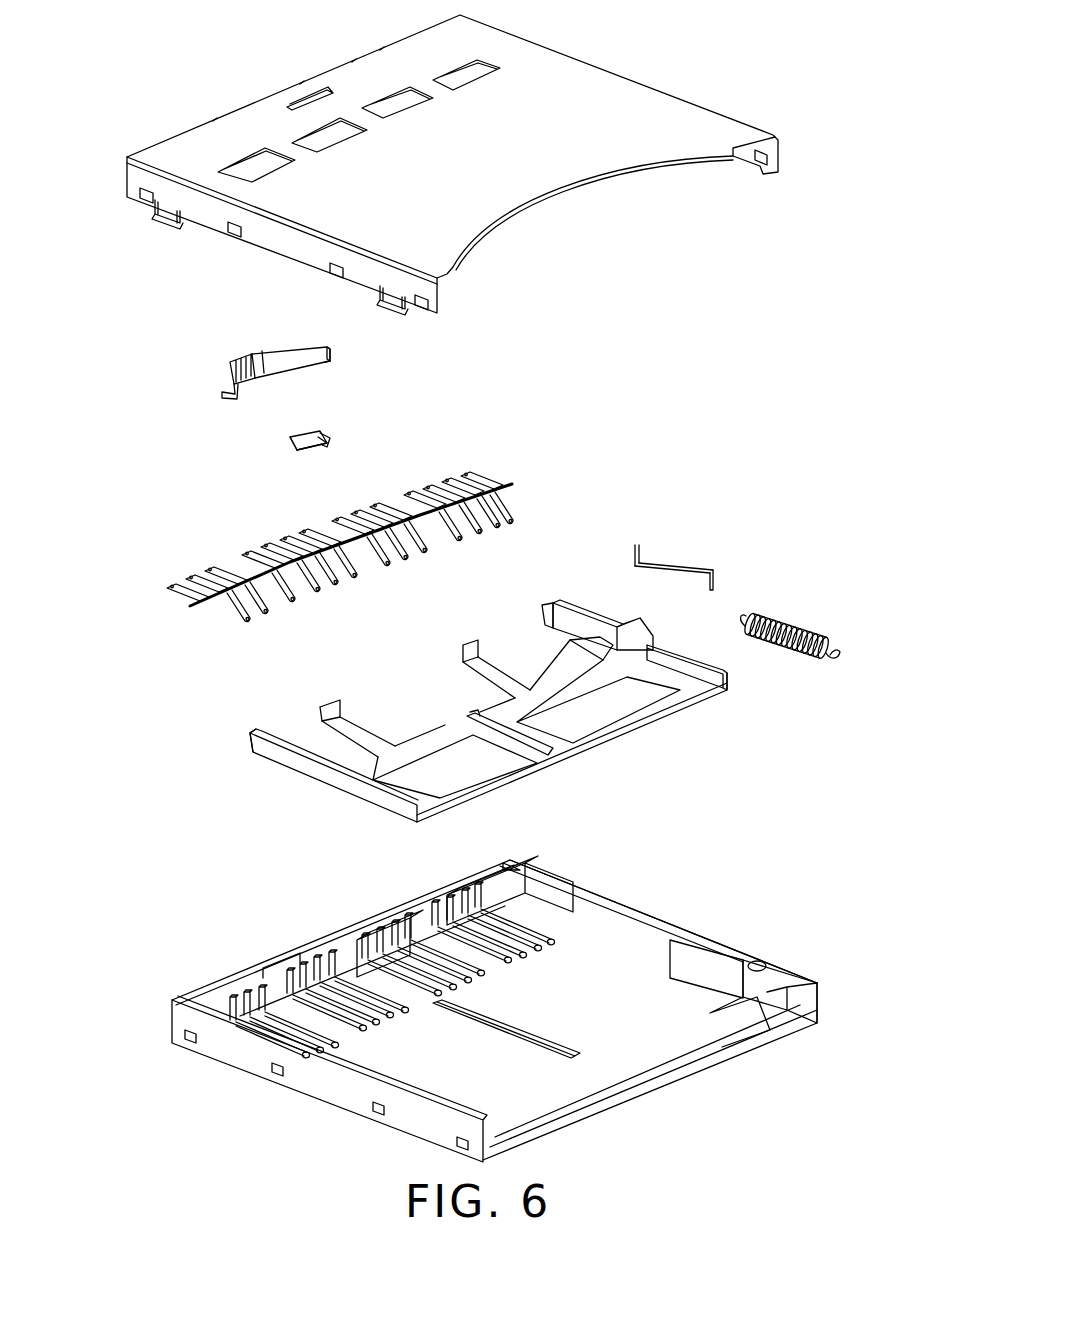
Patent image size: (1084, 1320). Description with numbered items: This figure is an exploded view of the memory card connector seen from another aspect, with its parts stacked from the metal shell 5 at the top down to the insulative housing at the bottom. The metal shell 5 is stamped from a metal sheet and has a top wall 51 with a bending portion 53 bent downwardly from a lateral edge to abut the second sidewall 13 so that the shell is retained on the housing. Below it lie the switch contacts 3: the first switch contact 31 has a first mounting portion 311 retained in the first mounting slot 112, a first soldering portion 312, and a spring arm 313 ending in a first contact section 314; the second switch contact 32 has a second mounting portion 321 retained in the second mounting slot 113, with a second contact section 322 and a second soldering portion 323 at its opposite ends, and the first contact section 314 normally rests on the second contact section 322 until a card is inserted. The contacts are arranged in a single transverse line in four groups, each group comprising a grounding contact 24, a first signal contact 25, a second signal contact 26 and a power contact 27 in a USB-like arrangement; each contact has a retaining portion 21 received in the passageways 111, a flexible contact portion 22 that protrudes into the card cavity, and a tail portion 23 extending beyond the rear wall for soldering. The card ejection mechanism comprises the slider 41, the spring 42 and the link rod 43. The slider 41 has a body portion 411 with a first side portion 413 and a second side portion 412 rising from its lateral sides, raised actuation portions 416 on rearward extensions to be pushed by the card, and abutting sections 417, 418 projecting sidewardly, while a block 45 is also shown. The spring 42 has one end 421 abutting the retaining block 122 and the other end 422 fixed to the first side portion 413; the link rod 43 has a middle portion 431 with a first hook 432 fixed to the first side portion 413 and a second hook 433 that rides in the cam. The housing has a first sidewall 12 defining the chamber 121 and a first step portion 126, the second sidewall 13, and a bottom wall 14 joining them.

The metal shell 5 is at (452, 165).
The top wall 51 is at (600, 108).
The bending portion 53 is at (270, 237).
The switch contacts 3 is at (260, 397).
The first switch contact 31 is at (281, 349).
The first mounting portion 311 is at (250, 362).
The first soldering portion 312 is at (222, 392).
The spring arm 313 is at (322, 350).
The first contact section 314 is at (326, 360).
The second switch contact 32 is at (297, 462).
The second mounting portion 321 is at (292, 438).
The second contact section 322 is at (325, 445).
The second soldering portion 323 is at (290, 440).
The retaining portion 21 is at (198, 603).
The flexible contact portion 22 is at (237, 600).
The tail portion 23 is at (167, 596).
The grounding contact 24 is at (438, 495).
The first signal contact 25 is at (460, 500).
The second signal contact 26 is at (480, 490).
The power contact 27 is at (505, 490).
The slider 41 is at (468, 685).
The body portion 411 is at (560, 755).
The second side portion 412 is at (305, 770).
The first side portion 413 is at (670, 662).
The raised actuation portion 416 is at (373, 670).
The abutting section 417 is at (262, 732).
The abutting section 418 is at (496, 614).
The engaging block 45 is at (546, 599).
The spring 42 is at (832, 613).
The one end 421 is at (837, 655).
The other end 422 is at (747, 620).
The link rod 43 is at (694, 535).
The middle portion 431 is at (673, 553).
The first hook 432 is at (712, 585).
The second hook 433 is at (632, 556).
The first sidewall 12 is at (770, 961).
The chamber 121 is at (627, 927).
The retaining block 122 is at (758, 960).
The first step portion 126 is at (733, 993).
The second sidewall 13 is at (327, 1080).
The bottom wall 14 is at (620, 1067).
The passageways 111 is at (412, 905).
The first mounting slot 112 is at (290, 963).
The second mounting slot 113 is at (357, 977).